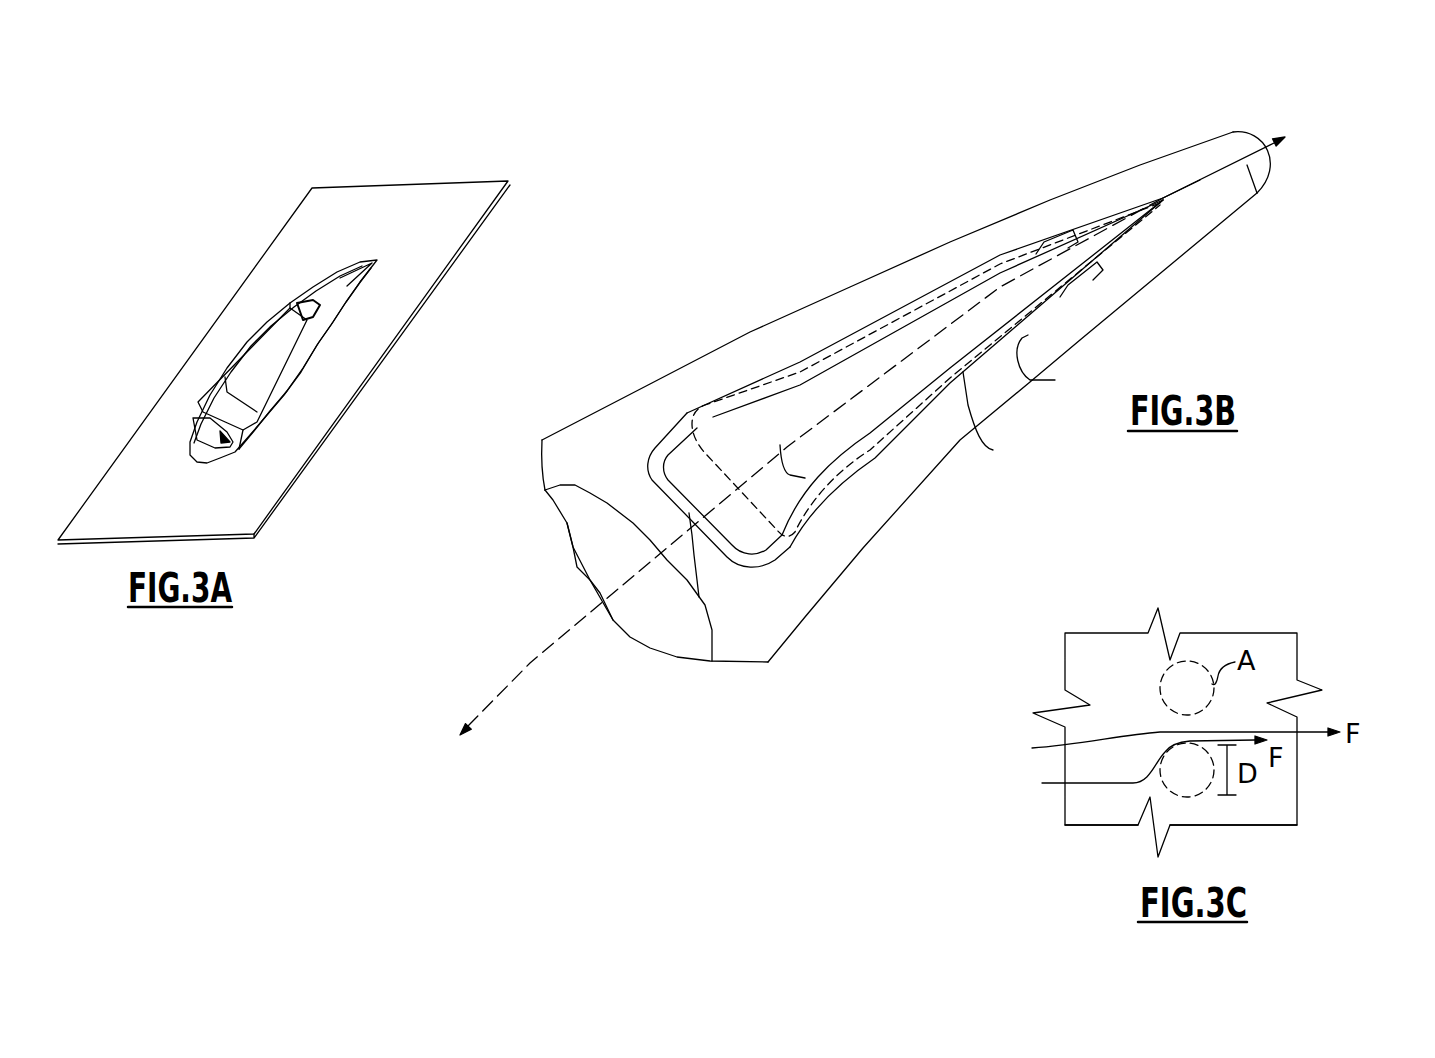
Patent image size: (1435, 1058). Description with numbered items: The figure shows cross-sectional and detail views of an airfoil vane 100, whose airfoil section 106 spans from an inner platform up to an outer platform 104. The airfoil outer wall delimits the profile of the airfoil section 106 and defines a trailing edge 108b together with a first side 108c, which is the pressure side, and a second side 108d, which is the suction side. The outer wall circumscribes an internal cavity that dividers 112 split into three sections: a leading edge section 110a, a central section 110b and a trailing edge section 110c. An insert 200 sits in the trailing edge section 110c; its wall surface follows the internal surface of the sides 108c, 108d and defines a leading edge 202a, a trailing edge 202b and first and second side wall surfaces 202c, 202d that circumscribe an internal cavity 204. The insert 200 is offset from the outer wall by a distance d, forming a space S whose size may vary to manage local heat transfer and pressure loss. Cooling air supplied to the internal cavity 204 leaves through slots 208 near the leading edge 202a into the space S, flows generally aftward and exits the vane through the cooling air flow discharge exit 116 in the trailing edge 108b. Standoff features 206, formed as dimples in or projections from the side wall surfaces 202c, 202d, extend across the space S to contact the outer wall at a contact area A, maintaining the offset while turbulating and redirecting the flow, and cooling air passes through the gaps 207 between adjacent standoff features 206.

In FIG. 3A, the airfoil vane 100 is at (148, 238).
In FIG. 3A, the outer platform 104 is at (303, 428).
In FIG. 3B, the airfoil section 106 is at (687, 231).
In FIG. 3B, the trailing edge 108b is at (1265, 112).
In FIG. 3B, the first side 108c is at (997, 400).
In FIG. 3C, the first side 108c is at (1260, 645).
In FIG. 3B, the second side 108d is at (892, 283).
In FIG. 3A, the leading edge section 110a is at (207, 435).
In FIG. 3A, the central section 110b is at (255, 378).
In FIG. 3B, the central section 110b is at (597, 627).
In FIG. 3A, the trailing edge section 110c is at (323, 305).
In FIG. 3B, the trailing edge section 110c is at (822, 413).
In FIG. 3A, the dividers 112 is at (290, 300).
In FIG. 3B, the dividers 112 is at (663, 537).
In FIG. 3B, the cooling air flow discharge exit 116 is at (1257, 193).
In FIG. 3B, the insert 200 is at (1020, 267).
In FIG. 3B, the leading edge 202a is at (699, 590).
In FIG. 3B, the trailing edge 202b is at (1163, 198).
In FIG. 3B, the first side wall surface 202c is at (850, 470).
In FIG. 3B, the second side wall surface 202d is at (977, 293).
In FIG. 3B, the internal cavity 204 is at (897, 370).
In FIG. 3B, the standoff features 206 is at (1053, 230).
In FIG. 3C, the standoff features 206 is at (1185, 680).
In FIG. 3C, the gaps 207 is at (1158, 705).
In FIG. 3B, the slots 208 is at (687, 413).